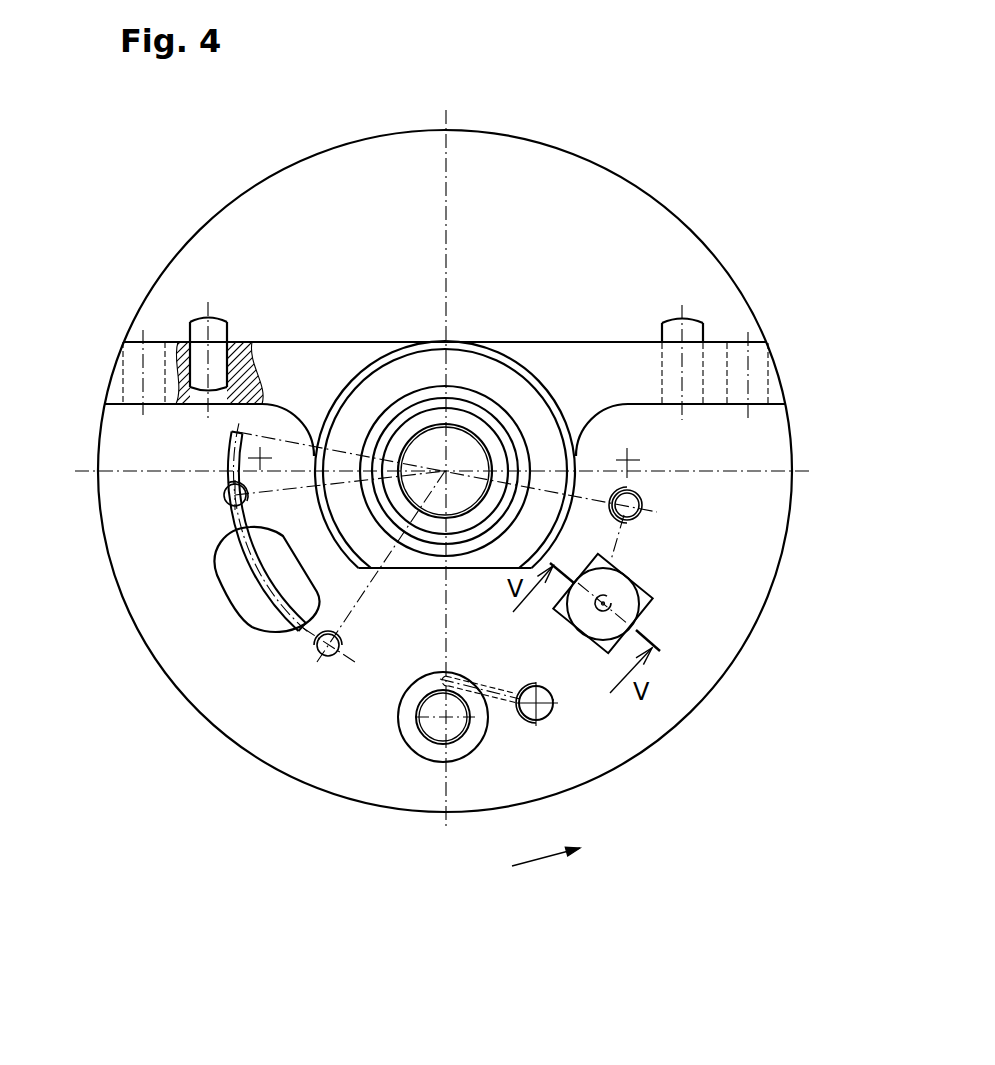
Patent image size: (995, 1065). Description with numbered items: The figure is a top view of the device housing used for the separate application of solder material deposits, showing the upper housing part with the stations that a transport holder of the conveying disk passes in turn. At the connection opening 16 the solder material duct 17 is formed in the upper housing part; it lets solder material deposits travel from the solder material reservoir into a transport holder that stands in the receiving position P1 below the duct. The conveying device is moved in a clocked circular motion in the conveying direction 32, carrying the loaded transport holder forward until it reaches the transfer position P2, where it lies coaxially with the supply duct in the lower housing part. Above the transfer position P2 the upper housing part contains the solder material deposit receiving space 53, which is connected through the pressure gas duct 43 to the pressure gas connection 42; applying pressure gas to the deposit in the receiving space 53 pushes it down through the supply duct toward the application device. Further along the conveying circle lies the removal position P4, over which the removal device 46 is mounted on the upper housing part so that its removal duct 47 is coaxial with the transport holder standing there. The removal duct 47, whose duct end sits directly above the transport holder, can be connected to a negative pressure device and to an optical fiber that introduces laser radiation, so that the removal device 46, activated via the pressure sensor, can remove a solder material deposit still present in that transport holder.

The connection opening 16 is at (237, 577).
The solder material duct 17 is at (280, 608).
The receiving position P1 is at (298, 627).
The solder material deposit receiving space 53 is at (437, 685).
The transfer position P2 is at (440, 684).
The pressure gas duct 43 is at (505, 697).
The pressure gas connection 42 is at (553, 700).
The conveying direction 32 is at (545, 870).
The removal device 46 is at (662, 603).
The removal duct 47 is at (610, 602).
The removal position P4 is at (620, 609).